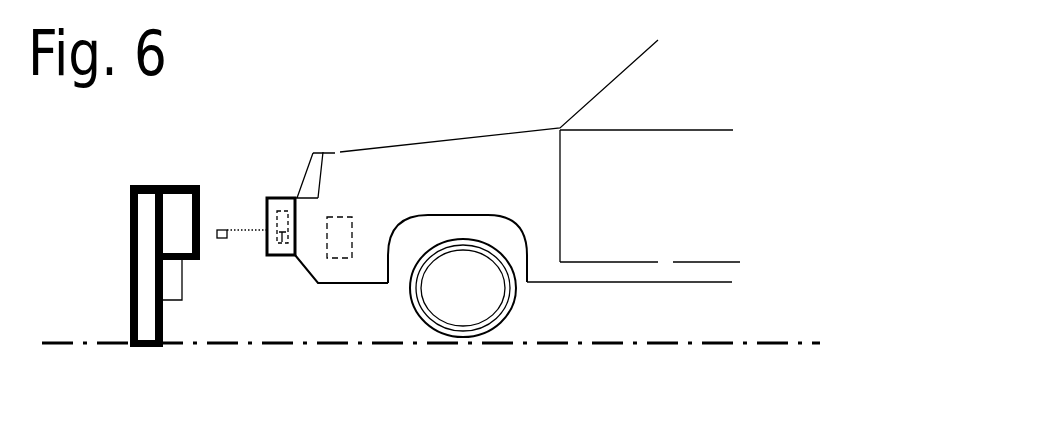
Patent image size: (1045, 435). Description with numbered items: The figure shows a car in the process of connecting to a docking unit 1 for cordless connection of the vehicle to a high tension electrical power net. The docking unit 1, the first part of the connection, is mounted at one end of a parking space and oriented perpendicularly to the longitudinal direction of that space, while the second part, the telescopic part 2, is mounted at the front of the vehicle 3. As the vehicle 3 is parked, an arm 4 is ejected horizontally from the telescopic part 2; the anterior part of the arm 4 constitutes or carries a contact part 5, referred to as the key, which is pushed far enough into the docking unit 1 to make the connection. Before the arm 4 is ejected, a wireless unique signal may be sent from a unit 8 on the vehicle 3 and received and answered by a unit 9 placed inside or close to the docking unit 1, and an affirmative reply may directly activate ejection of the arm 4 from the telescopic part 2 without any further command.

The docking unit 1 is at (173, 208).
The telescopic part 2 is at (280, 257).
The vehicle 3 is at (503, 145).
The arm 4 is at (241, 248).
The contact part 5 is at (226, 215).
The unit on the vehicle 8 is at (333, 257).
The unit near the docking unit 9 is at (170, 292).